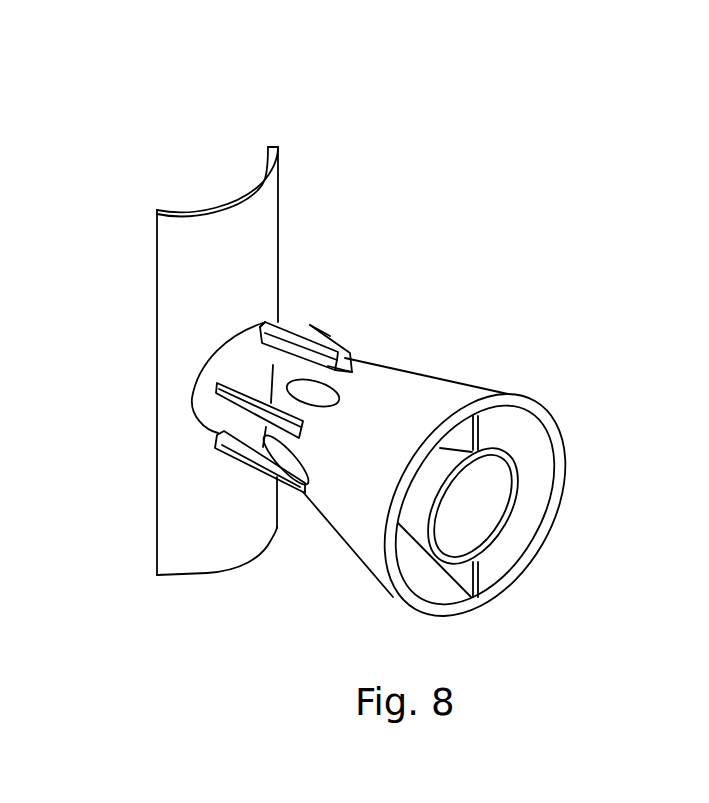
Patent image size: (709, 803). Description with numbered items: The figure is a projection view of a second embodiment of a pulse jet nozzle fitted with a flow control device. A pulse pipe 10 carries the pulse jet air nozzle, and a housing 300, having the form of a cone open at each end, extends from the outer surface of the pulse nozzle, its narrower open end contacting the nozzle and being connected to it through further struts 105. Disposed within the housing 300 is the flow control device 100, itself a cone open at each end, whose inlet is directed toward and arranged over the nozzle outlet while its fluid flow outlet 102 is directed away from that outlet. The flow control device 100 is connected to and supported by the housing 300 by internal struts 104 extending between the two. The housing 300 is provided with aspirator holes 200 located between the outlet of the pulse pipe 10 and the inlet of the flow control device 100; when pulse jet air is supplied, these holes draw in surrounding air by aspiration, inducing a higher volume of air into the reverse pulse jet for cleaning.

The pulse pipe 10 is at (238, 220).
The flow control device 100 is at (553, 447).
The fluid flow outlet 102 is at (475, 507).
The struts 104 is at (476, 577).
The further struts 105 is at (222, 447).
The aspirator holes 200 is at (322, 394).
The housing 300 is at (412, 398).